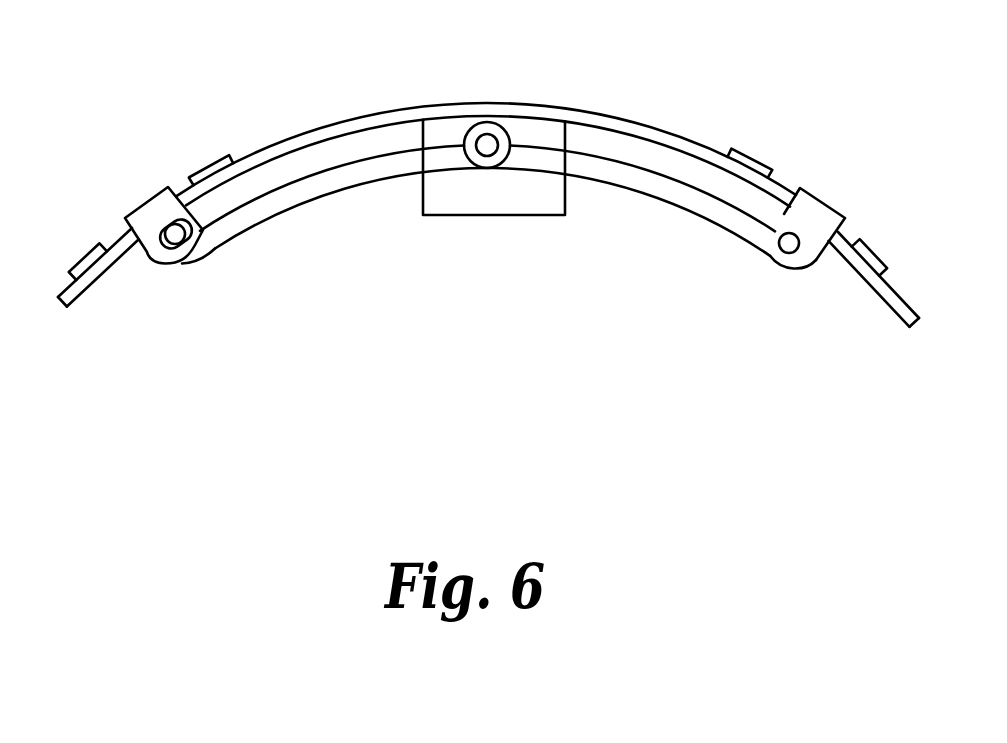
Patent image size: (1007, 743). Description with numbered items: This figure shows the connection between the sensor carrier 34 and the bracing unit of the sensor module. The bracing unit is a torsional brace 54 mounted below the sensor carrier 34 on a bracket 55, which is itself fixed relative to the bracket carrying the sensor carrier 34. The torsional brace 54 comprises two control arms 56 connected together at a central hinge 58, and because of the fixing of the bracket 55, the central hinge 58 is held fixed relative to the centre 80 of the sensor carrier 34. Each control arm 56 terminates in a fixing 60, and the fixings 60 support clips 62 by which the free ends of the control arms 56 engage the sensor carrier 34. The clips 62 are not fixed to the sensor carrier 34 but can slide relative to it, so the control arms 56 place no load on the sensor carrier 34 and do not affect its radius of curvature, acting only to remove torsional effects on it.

The sensor carrier 34 is at (642, 131).
The torsional brace 54 is at (460, 291).
The bracket 55 is at (532, 197).
The control arms 56 is at (317, 193).
The central hinge 58 is at (487, 148).
The fixings 60 is at (193, 258).
The clip 62 is at (162, 218).
The centre 80 is at (487, 103).